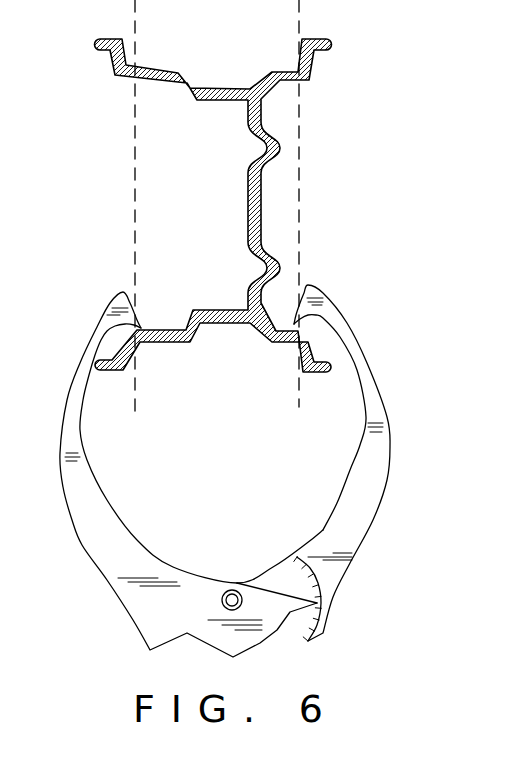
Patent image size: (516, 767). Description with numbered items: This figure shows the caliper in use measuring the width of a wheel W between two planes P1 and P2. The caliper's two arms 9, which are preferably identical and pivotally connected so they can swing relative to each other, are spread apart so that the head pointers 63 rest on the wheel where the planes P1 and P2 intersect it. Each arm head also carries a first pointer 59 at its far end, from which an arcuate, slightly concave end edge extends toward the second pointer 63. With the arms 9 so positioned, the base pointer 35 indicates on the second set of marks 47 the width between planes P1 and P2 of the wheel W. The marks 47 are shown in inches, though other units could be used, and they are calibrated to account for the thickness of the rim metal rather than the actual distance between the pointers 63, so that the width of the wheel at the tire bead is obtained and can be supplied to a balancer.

The wheel W is at (172, 50).
The first plane P1 is at (298, 2).
The second plane P2 is at (135, 12).
The arm 9 is at (82, 545).
The first pointer 59 is at (123, 292).
The second pointer 63 is at (137, 342).
The second set of marks 47 is at (318, 563).
The point 35 is at (320, 602).